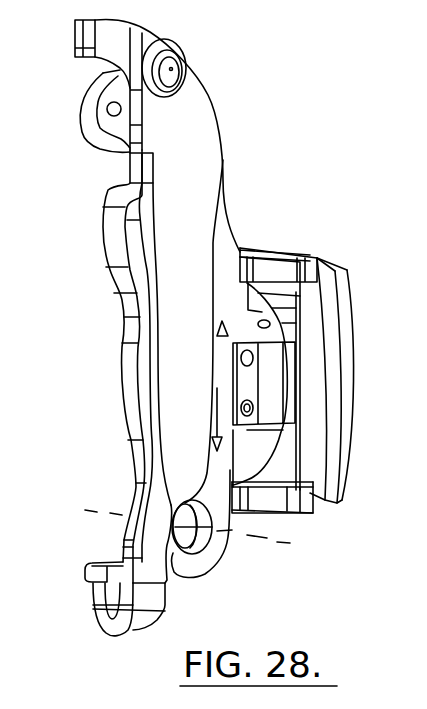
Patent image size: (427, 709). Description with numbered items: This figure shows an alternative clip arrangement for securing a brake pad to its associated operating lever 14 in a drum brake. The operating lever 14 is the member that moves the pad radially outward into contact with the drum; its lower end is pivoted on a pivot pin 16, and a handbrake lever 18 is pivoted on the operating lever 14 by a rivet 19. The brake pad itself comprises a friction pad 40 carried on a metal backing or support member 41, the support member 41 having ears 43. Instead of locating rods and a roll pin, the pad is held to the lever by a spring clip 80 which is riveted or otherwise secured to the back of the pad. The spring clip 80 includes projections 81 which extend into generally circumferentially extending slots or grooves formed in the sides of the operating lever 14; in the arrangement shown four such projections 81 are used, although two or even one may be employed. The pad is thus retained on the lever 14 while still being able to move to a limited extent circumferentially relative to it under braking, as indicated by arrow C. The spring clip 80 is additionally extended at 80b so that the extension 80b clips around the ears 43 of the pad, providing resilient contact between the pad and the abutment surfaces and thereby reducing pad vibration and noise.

The operating lever 14 is at (222, 235).
The pivot pin 16 is at (233, 533).
The handbrake lever 18 is at (150, 506).
The rivet 19 is at (172, 69).
The friction pad 40 is at (350, 350).
The backing/support member 41 is at (328, 397).
The ears 43 is at (290, 267).
The spring clip 80 is at (272, 402).
The clip extension 80b is at (278, 249).
The projection 81 is at (251, 407).
The arrow C is at (217, 390).